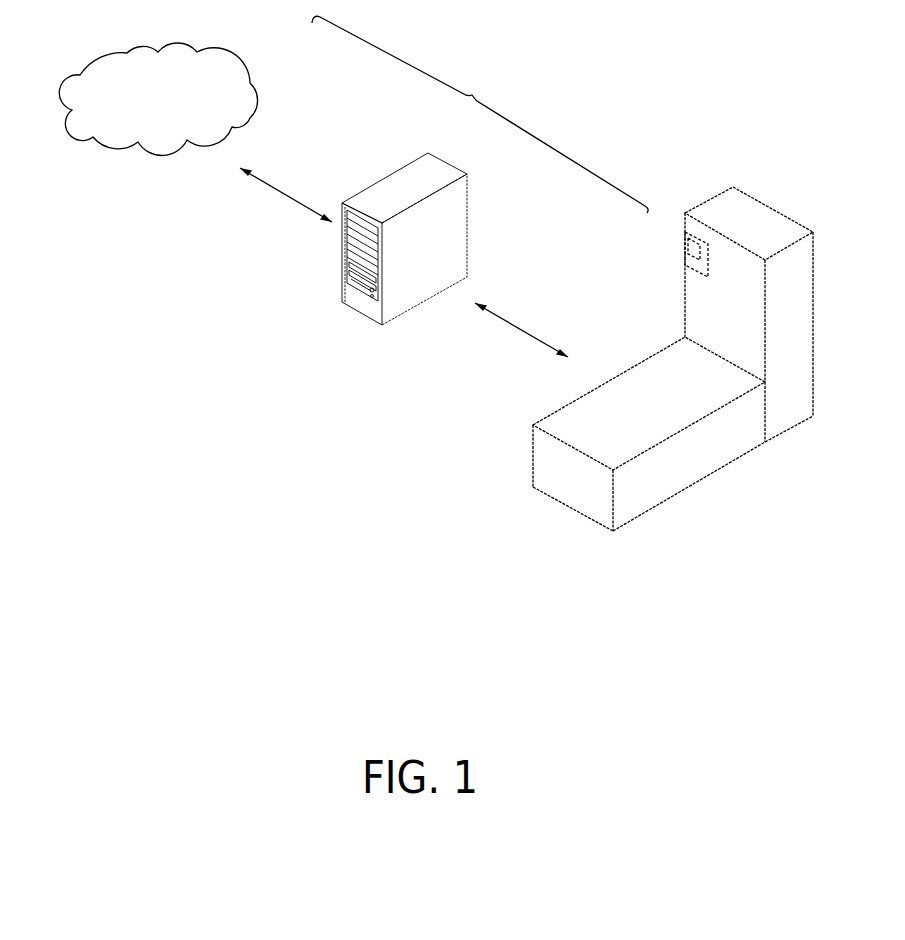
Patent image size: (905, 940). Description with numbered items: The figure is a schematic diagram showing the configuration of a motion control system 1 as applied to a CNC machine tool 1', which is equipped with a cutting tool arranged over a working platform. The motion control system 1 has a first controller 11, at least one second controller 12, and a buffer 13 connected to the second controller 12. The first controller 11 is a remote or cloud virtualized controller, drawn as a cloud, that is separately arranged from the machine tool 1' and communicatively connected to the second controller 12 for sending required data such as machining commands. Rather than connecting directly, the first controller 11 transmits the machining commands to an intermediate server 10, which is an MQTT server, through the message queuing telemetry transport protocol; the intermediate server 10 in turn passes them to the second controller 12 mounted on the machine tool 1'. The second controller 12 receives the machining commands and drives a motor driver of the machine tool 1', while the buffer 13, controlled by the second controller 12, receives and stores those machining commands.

The motion control system 1 is at (480, 114).
The intermediate server 10 is at (410, 172).
The first controller 11 is at (257, 97).
The second controller 12 is at (683, 232).
The buffer 13 is at (691, 248).
The CNC machine tool 1' is at (685, 359).